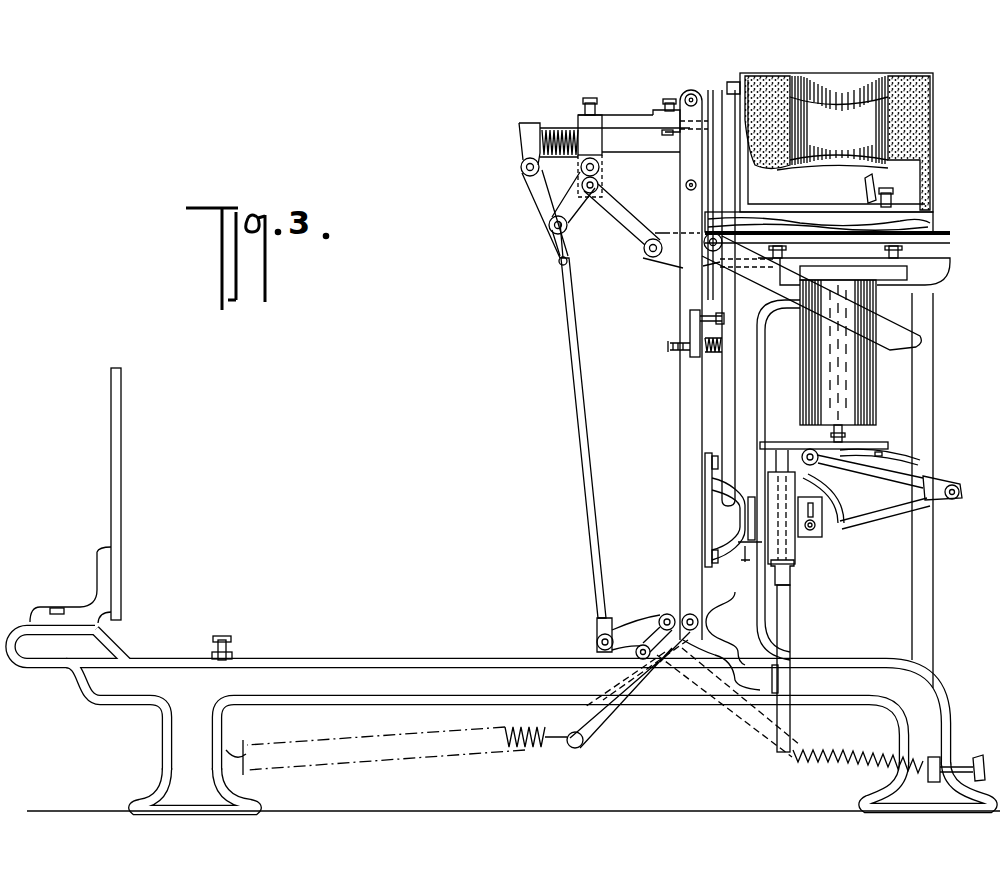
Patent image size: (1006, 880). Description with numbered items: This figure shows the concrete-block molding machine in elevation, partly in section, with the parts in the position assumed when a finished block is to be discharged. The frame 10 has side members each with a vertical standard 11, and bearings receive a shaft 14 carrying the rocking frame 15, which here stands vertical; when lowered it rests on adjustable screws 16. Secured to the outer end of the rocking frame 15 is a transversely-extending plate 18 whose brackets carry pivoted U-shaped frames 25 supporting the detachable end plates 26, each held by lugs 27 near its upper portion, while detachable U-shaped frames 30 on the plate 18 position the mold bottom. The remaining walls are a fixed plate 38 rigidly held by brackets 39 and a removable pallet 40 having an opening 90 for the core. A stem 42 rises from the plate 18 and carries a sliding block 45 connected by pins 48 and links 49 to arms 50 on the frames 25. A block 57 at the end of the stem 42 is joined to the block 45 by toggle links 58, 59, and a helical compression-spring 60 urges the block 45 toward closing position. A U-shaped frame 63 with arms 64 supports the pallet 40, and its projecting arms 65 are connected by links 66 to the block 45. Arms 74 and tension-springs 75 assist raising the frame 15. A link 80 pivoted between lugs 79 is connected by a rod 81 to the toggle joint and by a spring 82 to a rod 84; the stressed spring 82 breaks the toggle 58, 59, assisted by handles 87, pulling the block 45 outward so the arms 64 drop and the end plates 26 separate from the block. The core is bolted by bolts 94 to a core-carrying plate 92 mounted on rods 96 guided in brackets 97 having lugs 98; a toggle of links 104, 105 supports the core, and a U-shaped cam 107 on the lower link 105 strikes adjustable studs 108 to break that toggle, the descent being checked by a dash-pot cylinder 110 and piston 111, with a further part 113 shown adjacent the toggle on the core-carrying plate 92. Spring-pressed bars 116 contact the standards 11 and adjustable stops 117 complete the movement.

The frame 10 is at (502, 720).
The vertical standard 11 is at (745, 390).
The shaft 14 is at (683, 615).
The rocking frame 15 is at (690, 386).
The screws 16 is at (215, 636).
The transversely-extending plate 18 is at (690, 160).
The U-shaped frame 25 is at (866, 201).
The end plate 26 is at (740, 193).
The lugs 27 is at (893, 201).
The detachable U-shaped frames 30 is at (730, 92).
The plate 38 is at (121, 464).
The brackets 39 is at (97, 571).
The pallet 40 is at (740, 226).
The stem 42 is at (636, 143).
The block 45 is at (596, 140).
The pins or bolts 48 is at (590, 98).
The links 49 is at (655, 106).
The arms 50 is at (669, 100).
The block 57 is at (519, 141).
The link 58 is at (535, 193).
The link 59 is at (572, 208).
The helical compression-spring 60 is at (560, 128).
The U-shaped frame 63 is at (710, 263).
The arms 64 is at (790, 276).
The arms 65 is at (670, 262).
The links 66 is at (628, 224).
The arms 74 is at (605, 707).
The tension-springs 75 is at (512, 756).
The lugs 79 is at (660, 615).
The link 80 is at (597, 637).
The rod 81 is at (584, 399).
The spring 82 is at (830, 763).
The rod 84 is at (860, 777).
The handles 87 is at (559, 262).
The opening 90 is at (805, 220).
The core-carrying plate 92 is at (858, 441).
The bolts 94 is at (800, 354).
The rods 96 is at (790, 600).
The brackets 97 is at (773, 487).
The lugs 98 is at (822, 538).
The link 104 is at (878, 472).
The lower link 105 is at (880, 513).
The U-shaped cam 107 is at (828, 495).
The adjustable studs 108 is at (745, 515).
The elongated cylinder 110 is at (777, 653).
The piston 111 is at (772, 679).
The spring 113 is at (880, 461).
The spring-pressed bars 116 is at (710, 354).
The adjustable stops 117 is at (689, 321).